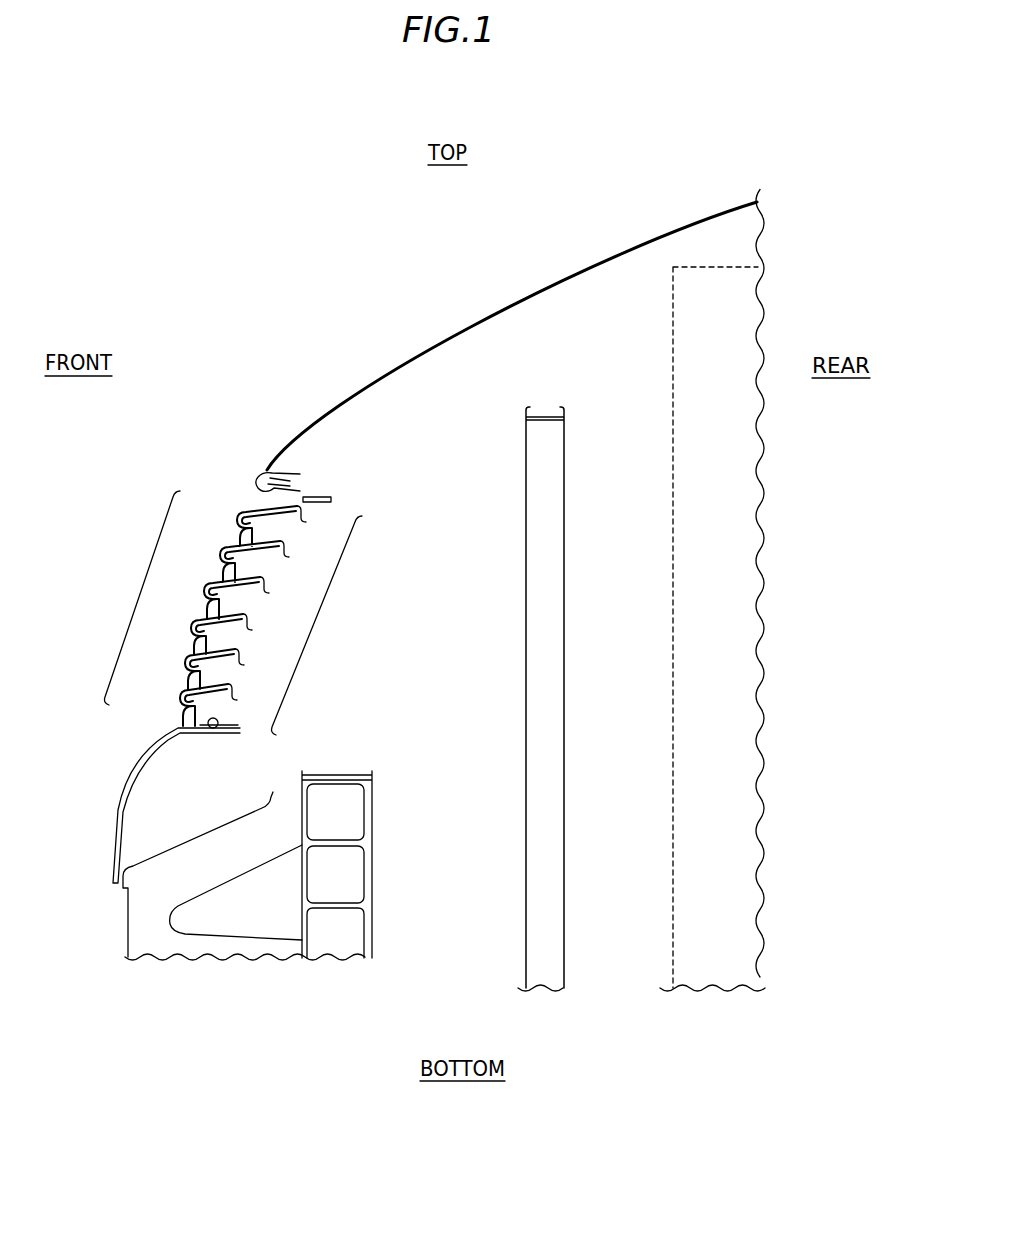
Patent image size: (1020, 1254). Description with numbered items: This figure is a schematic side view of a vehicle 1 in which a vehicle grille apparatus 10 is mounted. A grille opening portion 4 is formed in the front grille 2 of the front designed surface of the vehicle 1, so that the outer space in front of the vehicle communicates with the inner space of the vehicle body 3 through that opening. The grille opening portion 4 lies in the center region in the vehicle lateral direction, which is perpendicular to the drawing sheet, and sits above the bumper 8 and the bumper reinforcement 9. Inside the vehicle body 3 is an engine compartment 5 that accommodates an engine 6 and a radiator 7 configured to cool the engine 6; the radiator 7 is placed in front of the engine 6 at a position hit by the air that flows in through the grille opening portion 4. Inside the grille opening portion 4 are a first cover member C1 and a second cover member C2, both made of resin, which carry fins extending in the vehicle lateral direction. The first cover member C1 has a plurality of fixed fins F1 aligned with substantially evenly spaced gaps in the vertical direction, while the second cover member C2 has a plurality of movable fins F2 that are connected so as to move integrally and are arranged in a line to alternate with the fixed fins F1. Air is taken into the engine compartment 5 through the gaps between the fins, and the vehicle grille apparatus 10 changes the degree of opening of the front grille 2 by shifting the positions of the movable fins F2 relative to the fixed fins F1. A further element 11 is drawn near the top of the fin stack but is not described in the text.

The vehicle 1 is at (318, 239).
The front grille 2 is at (121, 792).
The vehicle body 3 is at (397, 368).
The grille opening portion 4 is at (216, 736).
The engine compartment 5 is at (636, 345).
The engine 6 is at (673, 582).
The radiator 7 is at (525, 527).
The bumper 8 is at (128, 905).
The bumper reinforcement 9 is at (372, 882).
The vehicle grille apparatus 10 is at (237, 497).
The mounting plate 11 is at (320, 498).
The fixed fins F1 is at (302, 516).
The movable fins F2 is at (239, 534).
The first cover member C1 is at (313, 626).
The second cover member C2 is at (146, 580).